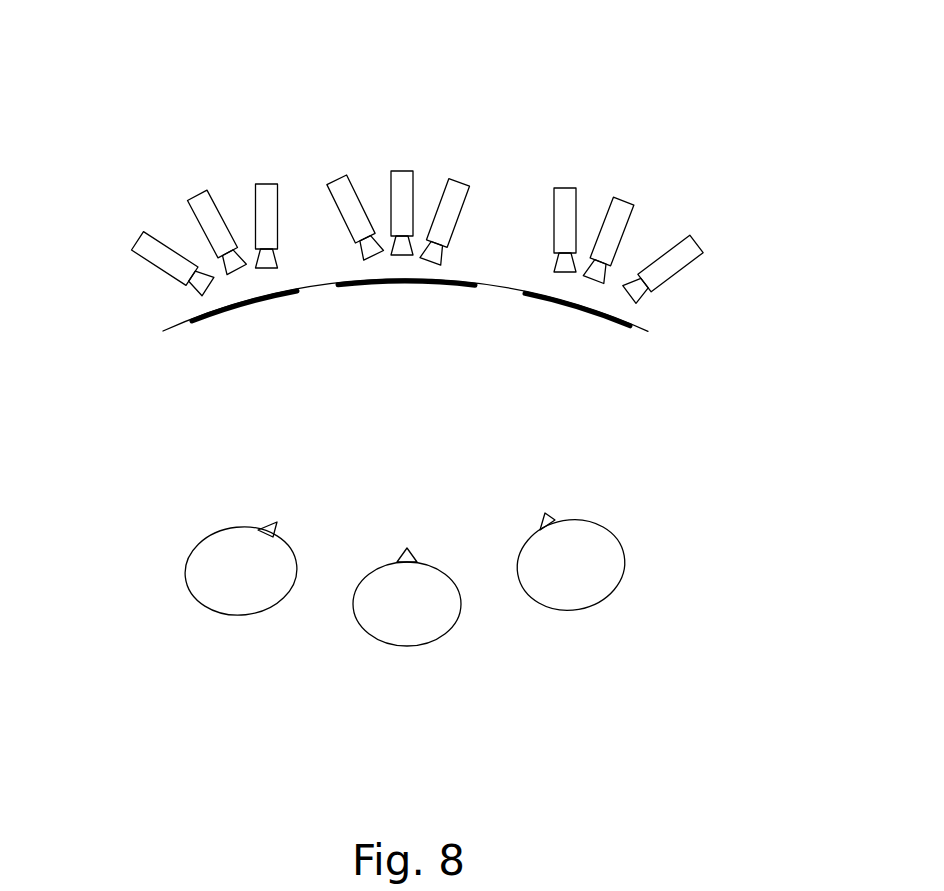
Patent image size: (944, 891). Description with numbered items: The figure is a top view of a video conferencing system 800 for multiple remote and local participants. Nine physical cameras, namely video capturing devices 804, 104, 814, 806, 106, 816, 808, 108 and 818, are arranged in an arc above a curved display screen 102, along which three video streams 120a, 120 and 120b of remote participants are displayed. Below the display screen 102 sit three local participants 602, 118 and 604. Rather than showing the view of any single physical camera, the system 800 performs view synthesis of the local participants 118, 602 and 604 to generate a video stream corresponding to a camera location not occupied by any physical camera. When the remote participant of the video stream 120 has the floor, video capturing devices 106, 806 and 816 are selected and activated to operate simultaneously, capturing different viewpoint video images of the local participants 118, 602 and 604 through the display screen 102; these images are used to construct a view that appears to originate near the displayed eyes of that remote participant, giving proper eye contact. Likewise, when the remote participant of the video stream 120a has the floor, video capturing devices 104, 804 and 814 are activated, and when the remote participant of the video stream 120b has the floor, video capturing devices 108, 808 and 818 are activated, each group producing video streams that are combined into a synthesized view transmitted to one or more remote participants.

The video conferencing system 800 is at (875, 38).
The display screen 102 is at (180, 324).
The video stream 120 is at (446, 285).
The video stream 120a is at (214, 312).
The video stream 120b is at (608, 316).
The video capturing device 804 is at (137, 240).
The video capturing device 104 is at (198, 194).
The video capturing device 814 is at (266, 183).
The video capturing device 806 is at (338, 180).
The video capturing device 106 is at (402, 170).
The video capturing device 816 is at (460, 183).
The video capturing device 808 is at (565, 188).
The video capturing device 108 is at (624, 201).
The video capturing device 818 is at (697, 244).
The local participant 602 is at (185, 568).
The local participant 118 is at (462, 603).
The local participant 604 is at (625, 563).